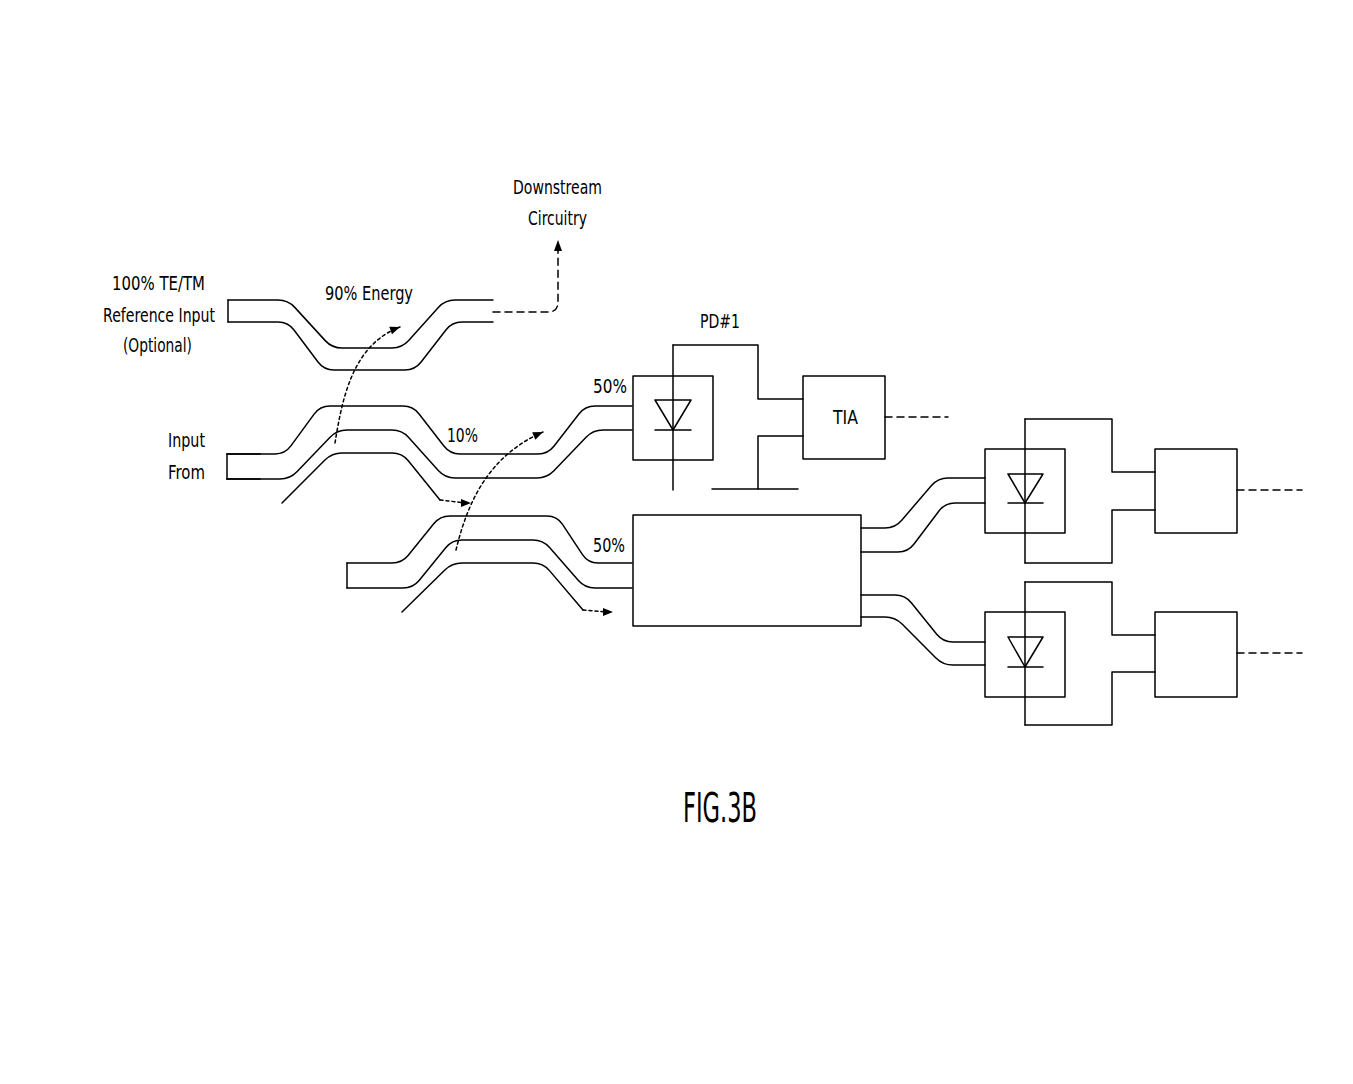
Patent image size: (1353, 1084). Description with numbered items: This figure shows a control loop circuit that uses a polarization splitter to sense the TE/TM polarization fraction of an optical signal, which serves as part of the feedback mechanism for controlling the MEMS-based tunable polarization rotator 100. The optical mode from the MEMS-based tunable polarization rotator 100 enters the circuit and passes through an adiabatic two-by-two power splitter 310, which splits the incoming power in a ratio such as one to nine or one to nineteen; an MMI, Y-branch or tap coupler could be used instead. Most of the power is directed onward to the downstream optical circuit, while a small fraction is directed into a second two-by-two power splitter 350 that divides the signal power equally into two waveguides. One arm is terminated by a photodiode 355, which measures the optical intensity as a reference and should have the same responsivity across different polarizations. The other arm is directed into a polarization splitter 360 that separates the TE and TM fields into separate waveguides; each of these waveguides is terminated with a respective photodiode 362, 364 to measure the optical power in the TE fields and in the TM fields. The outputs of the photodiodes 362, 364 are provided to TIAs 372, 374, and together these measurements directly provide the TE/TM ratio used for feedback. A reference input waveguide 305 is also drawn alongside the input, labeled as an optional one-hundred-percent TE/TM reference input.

The MEMS-based tunable polarization rotator 100 is at (217, 484).
The reference input waveguide (100% TE/TM reference input) 305 is at (263, 298).
The adiabatic 2×2 power splitter 310 is at (257, 482).
The 2×2 power splitter 350 is at (373, 590).
The photodiode 355 is at (653, 376).
The polarization splitter 360 is at (682, 627).
The photodiode 362 is at (1008, 449).
The photodiode 364 is at (998, 698).
The TIA 372 is at (1213, 449).
The TIA 374 is at (1185, 698).